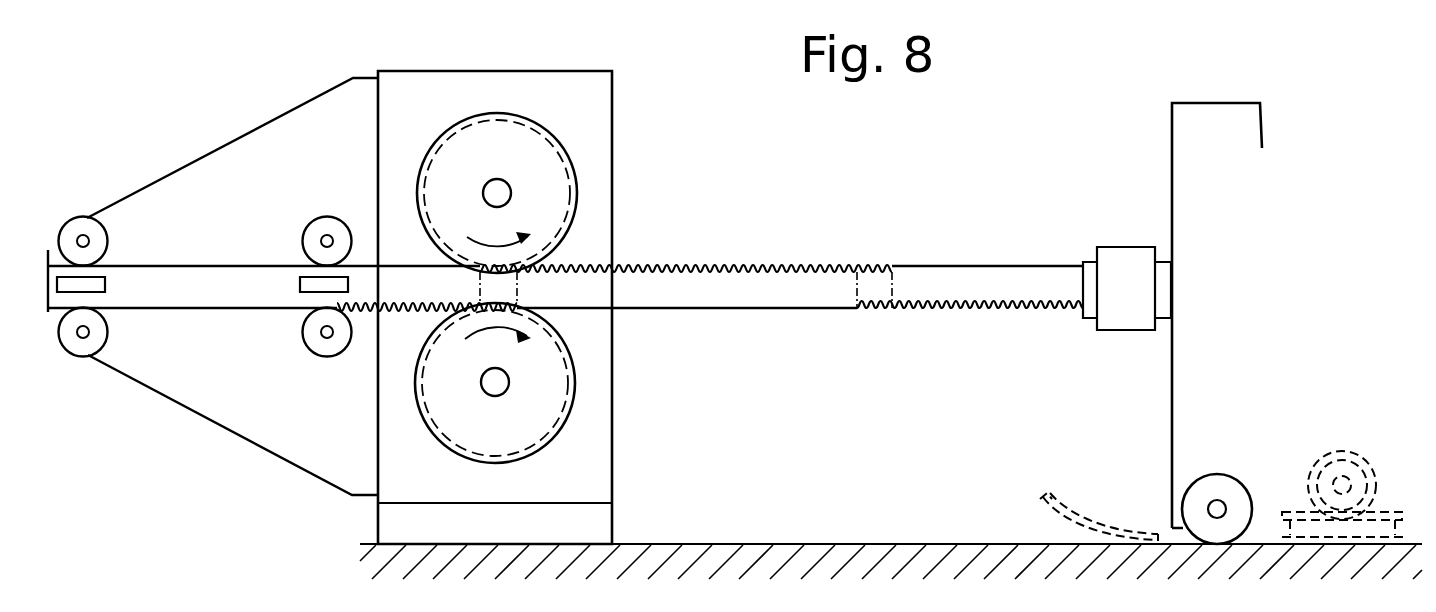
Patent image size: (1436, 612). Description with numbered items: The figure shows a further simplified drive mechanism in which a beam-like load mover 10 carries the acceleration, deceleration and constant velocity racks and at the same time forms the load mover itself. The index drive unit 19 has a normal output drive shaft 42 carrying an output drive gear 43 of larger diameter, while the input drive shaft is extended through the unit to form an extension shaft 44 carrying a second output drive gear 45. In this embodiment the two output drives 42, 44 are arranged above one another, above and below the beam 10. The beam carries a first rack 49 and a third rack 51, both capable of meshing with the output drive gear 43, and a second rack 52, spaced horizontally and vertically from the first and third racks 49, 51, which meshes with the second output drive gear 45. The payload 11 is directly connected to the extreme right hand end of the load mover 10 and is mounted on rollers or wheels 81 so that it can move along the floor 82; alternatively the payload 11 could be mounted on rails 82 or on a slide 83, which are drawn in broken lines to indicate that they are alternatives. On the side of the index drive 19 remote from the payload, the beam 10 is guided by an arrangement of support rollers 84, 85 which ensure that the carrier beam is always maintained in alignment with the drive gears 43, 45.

The load mover 10 is at (197, 298).
The payload 11 is at (1180, 159).
The index drive unit 19 is at (598, 147).
The output drive shaft 42 is at (498, 388).
The output drive gear 43 is at (555, 370).
The extension shaft 44 is at (497, 188).
The second output drive gear 45 is at (562, 201).
The first rack 49 is at (985, 306).
The third rack 51 is at (407, 309).
The second rack 52 is at (713, 273).
The rollers or wheels 81 is at (1217, 485).
The floor or rails 82 is at (1290, 512).
The slide 83 is at (1037, 503).
The support rollers 84 is at (82, 228).
The support rollers 85 is at (106, 283).